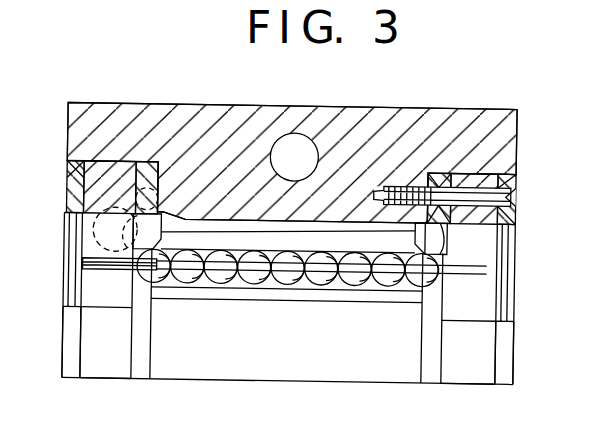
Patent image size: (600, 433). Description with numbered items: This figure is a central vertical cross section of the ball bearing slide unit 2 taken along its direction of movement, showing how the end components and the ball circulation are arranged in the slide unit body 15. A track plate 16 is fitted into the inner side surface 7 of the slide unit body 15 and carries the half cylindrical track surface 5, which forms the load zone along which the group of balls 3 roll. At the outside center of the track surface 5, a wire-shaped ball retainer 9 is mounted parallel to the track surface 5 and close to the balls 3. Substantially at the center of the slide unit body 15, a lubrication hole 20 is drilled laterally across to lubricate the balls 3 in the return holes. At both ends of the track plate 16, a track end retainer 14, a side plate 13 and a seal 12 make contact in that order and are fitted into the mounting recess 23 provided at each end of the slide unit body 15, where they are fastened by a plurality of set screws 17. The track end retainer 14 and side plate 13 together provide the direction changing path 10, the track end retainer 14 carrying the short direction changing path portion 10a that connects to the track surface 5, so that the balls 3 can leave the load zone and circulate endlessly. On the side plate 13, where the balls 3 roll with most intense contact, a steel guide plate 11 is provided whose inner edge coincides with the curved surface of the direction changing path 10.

The ball bearing slide unit 2 is at (337, 106).
The balls 3 is at (224, 286).
The track surface 5 is at (336, 286).
The inner side surface 7 is at (358, 384).
The ball retainer 9 is at (282, 297).
The direction changing path 10 is at (72, 230).
The short direction changing path portion 10a is at (132, 290).
The guide plate 11 is at (88, 282).
The seal 12 is at (72, 356).
The side plate 13 is at (102, 381).
The track end retainer 14 is at (142, 381).
The slide unit body 15 is at (420, 122).
The track plate 16 is at (396, 302).
The set screw 17 is at (517, 196).
The lubrication hole 20 is at (293, 148).
The mounting recess 23 is at (150, 178).